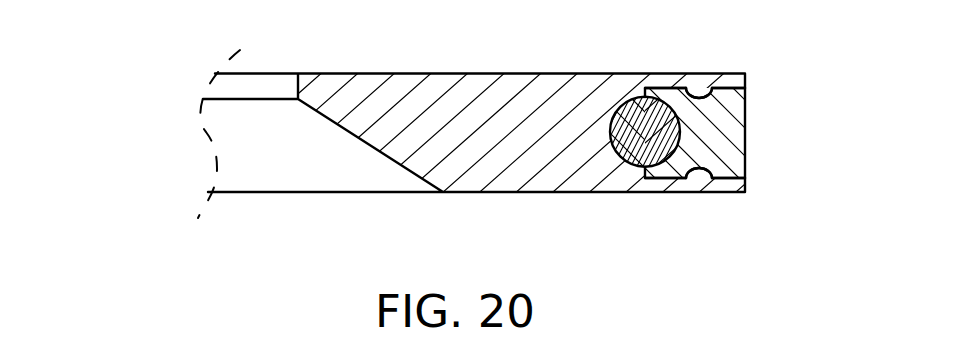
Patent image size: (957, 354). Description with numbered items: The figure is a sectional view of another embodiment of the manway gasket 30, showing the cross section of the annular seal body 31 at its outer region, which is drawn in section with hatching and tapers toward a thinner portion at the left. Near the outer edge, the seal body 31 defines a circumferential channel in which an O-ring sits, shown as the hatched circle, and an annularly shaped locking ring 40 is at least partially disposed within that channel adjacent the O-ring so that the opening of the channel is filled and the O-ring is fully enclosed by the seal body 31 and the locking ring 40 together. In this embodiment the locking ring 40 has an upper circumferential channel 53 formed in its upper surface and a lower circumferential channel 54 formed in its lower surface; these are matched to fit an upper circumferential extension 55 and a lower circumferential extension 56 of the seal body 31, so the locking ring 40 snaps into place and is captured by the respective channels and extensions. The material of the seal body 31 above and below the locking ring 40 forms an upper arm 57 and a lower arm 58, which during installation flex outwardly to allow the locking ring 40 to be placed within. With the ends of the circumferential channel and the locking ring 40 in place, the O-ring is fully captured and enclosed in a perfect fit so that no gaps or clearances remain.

The manway gasket 30 is at (158, 132).
The seal body 31 is at (482, 103).
The locking ring 40 is at (747, 137).
The upper circumferential channel 53 is at (745, 58).
The upper circumferential extension 55 is at (698, 96).
The lower circumferential channel 54 is at (748, 206).
The lower circumferential extension 56 is at (698, 171).
The upper arm 57 is at (747, 82).
The lower arm 58 is at (747, 185).